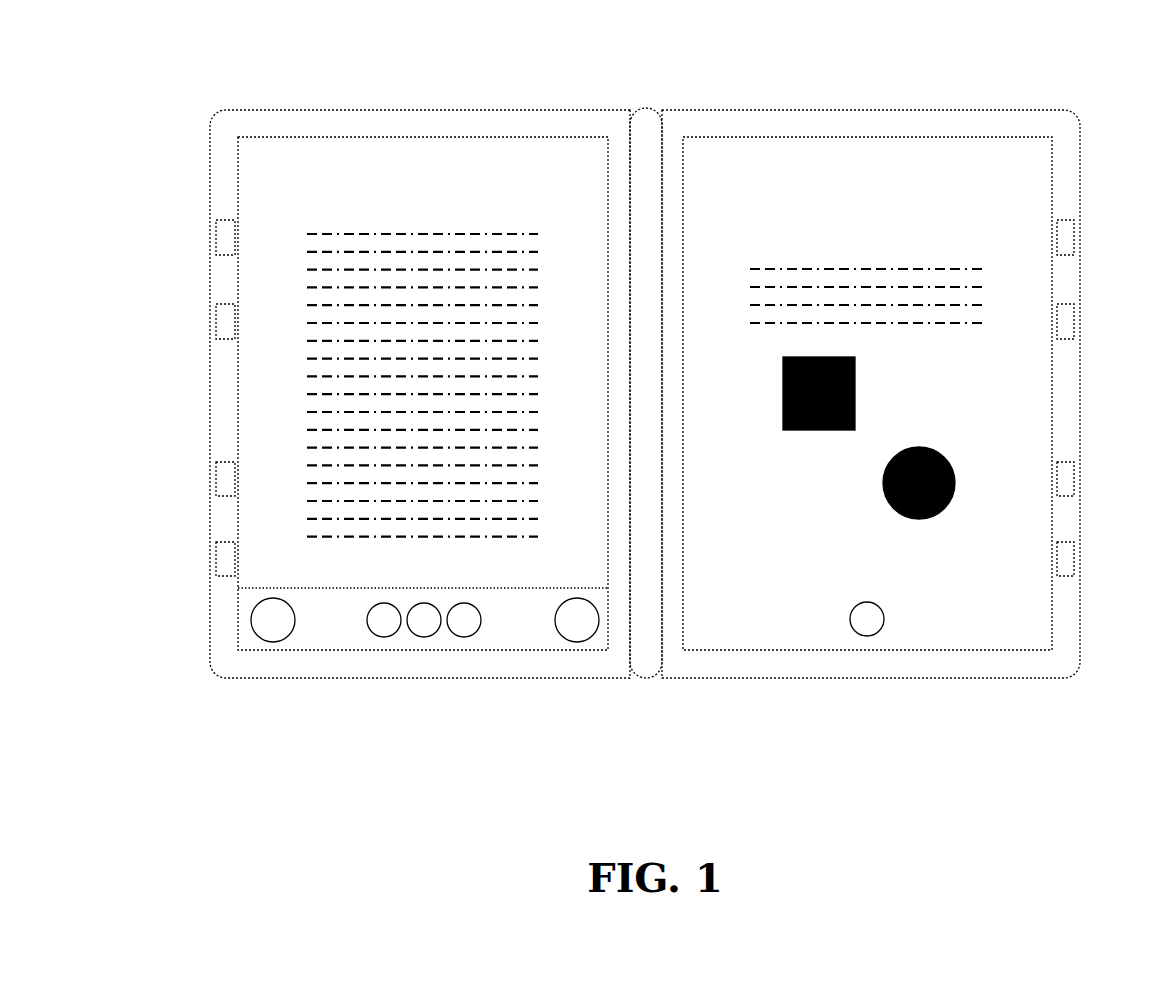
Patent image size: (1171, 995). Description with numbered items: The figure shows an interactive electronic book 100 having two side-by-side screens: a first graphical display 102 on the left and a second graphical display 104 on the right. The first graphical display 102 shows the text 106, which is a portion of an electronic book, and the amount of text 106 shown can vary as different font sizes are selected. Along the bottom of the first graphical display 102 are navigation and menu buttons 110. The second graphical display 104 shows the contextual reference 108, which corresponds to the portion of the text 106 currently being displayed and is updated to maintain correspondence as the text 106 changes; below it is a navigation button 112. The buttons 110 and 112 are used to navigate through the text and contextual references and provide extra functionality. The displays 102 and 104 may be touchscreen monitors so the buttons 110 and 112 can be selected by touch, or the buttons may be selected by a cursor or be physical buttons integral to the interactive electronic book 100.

The interactive electronic book 100 is at (634, 70).
The first graphical display 102 is at (237, 133).
The second graphical display 104 is at (1053, 133).
The text 106 is at (386, 222).
The contextual reference 108 is at (865, 233).
The navigation and menu buttons 110 is at (561, 638).
The navigation button 112 is at (866, 639).